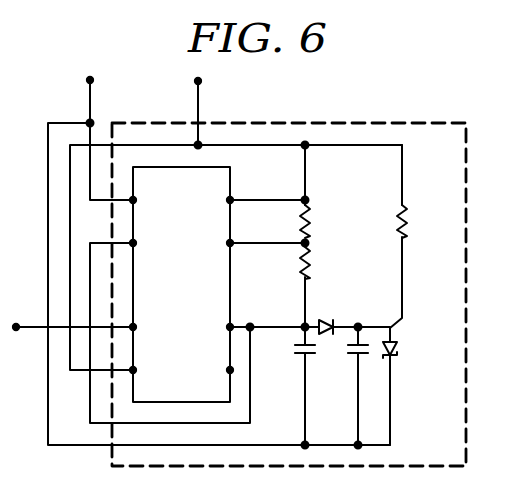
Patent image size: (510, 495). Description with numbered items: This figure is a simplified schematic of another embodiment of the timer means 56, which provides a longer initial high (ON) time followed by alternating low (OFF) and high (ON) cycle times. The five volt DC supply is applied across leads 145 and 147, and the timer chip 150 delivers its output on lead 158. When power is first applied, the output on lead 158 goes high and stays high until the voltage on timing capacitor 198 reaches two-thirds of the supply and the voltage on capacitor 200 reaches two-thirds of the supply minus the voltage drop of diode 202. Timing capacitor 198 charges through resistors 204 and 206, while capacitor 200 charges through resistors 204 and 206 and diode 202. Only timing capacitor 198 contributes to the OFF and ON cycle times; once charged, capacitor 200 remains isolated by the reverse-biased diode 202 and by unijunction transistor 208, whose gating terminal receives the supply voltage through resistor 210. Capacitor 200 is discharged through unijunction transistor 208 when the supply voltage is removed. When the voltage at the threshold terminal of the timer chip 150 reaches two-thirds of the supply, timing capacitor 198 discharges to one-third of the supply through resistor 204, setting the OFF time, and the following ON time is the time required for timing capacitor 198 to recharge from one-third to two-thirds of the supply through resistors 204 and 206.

The timer means 56 is at (352, 121).
The lead 145 is at (199, 113).
The lead 147 is at (92, 113).
The 555 timer chip 150 is at (232, 173).
The lead 158 is at (40, 329).
The timing capacitor 198 is at (298, 358).
The capacitor 200 is at (356, 358).
The diode 202 is at (331, 321).
The resistor 204 is at (310, 264).
The resistor 206 is at (309, 216).
The unijunction transistor 208 is at (397, 352).
The resistor 210 is at (403, 214).